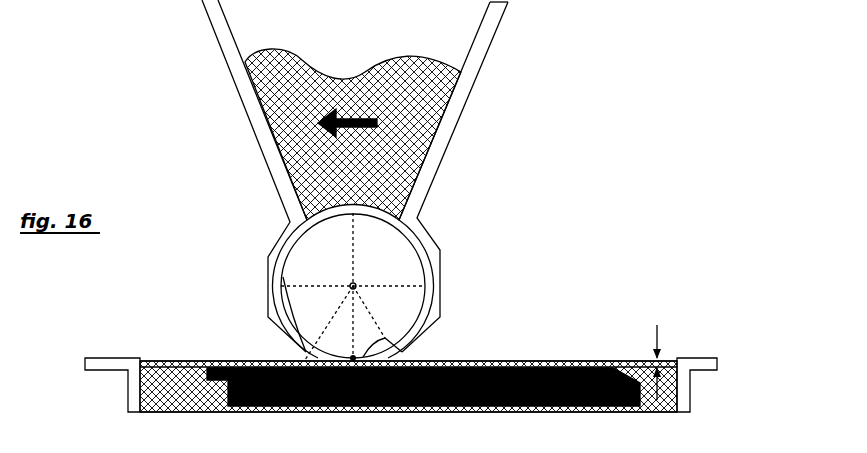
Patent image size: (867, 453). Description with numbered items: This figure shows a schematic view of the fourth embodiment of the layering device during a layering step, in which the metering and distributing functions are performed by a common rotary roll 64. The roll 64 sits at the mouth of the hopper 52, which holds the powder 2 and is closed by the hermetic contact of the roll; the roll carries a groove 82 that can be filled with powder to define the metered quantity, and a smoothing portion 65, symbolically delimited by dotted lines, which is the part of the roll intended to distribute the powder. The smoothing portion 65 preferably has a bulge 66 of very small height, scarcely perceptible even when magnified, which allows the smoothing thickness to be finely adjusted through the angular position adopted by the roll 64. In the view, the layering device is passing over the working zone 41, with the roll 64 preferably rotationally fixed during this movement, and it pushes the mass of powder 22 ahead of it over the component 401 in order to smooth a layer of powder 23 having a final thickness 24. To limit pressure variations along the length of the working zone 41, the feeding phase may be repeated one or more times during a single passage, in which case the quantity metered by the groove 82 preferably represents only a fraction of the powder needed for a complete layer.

The powder 2 is at (346, 187).
The mass of powder 22 is at (305, 360).
The layer of powder 23 is at (572, 361).
The final thickness 24 is at (670, 362).
The working zone 41 is at (538, 267).
The hopper 52 is at (250, 103).
The common rotary roll 64 is at (322, 250).
The smoothing portion 65 is at (360, 325).
The bulge 66 is at (385, 338).
The groove 82 is at (283, 277).
The component 401 is at (436, 396).